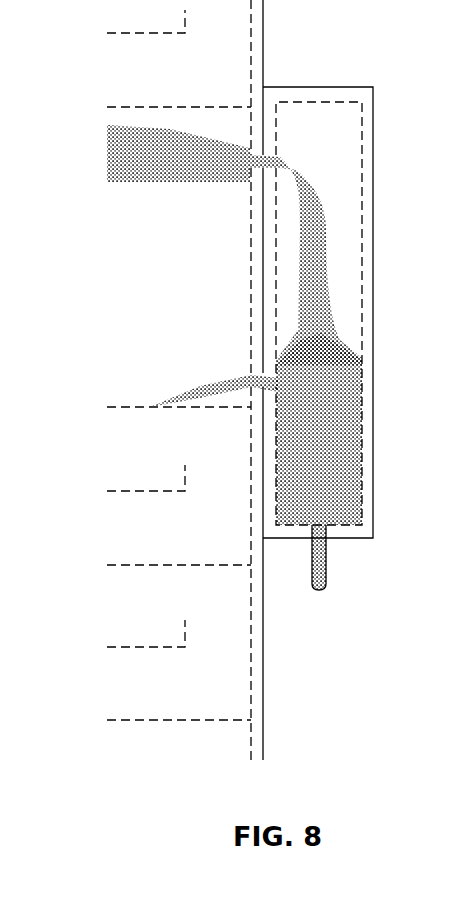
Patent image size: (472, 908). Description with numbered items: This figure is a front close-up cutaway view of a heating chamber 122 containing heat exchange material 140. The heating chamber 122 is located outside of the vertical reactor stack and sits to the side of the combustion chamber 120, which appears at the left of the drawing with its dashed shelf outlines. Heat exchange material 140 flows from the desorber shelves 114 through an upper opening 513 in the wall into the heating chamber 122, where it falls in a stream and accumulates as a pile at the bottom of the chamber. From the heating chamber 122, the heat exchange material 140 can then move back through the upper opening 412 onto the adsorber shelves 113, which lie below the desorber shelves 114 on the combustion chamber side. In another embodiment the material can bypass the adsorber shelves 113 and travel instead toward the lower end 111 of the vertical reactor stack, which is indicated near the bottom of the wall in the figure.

The lower end 111 is at (264, 692).
The adsorber shelves 113 is at (153, 494).
The desorber shelves 114 is at (153, 36).
The combustion chamber 120 is at (140, 300).
The heating chamber 122 is at (343, 203).
The heat exchange material 140 is at (340, 418).
The upper opening 412 is at (256, 380).
The upper opening 513 is at (263, 170).